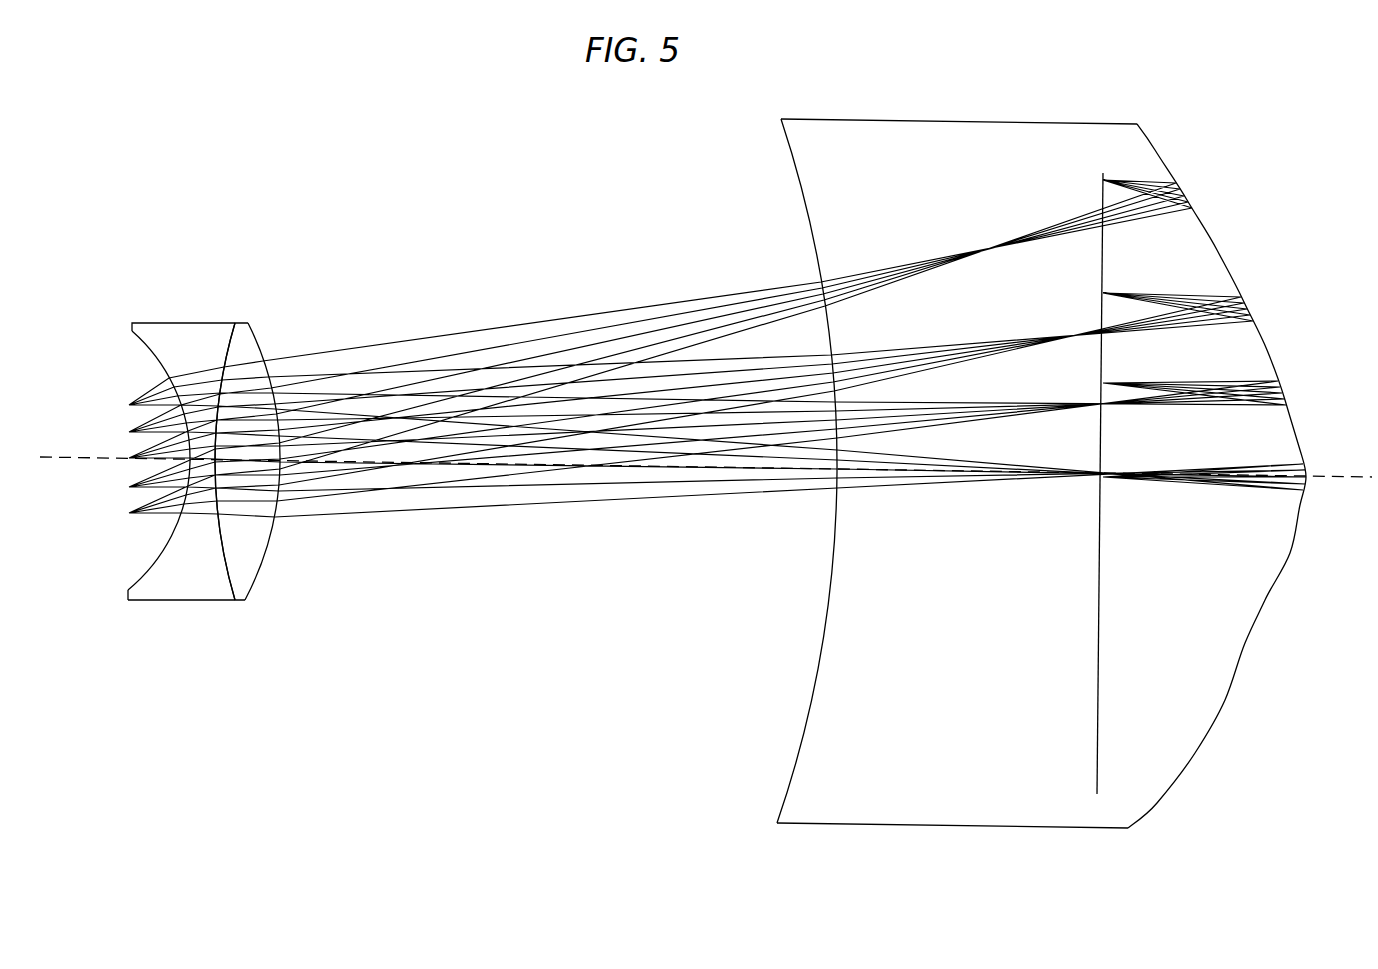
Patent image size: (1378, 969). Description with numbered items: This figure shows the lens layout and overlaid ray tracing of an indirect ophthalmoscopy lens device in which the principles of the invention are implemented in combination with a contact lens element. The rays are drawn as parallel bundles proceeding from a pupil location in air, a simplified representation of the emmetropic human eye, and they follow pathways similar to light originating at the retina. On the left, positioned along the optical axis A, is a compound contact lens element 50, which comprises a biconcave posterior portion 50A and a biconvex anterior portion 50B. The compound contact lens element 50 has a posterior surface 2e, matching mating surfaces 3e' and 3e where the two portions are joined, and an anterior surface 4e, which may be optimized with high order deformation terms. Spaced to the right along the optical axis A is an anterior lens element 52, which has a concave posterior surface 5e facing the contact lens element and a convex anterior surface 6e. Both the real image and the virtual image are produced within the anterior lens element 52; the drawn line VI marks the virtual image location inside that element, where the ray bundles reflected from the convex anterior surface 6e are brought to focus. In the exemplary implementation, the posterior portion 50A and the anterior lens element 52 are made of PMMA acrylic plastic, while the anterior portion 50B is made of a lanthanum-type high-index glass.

The anterior lens element 52 is at (1030, 451).
The compound contact lens element 50 is at (223, 424).
The biconcave posterior portion 50A is at (166, 454).
The biconvex anterior portion 50B is at (281, 466).
The posterior surface 2e is at (161, 553).
The mating surface 3e is at (209, 498).
The mating surface 3e' is at (266, 473).
The anterior surface 4e is at (270, 545).
The concave posterior surface 5e is at (818, 663).
The convex anterior surface 6e is at (1225, 705).
The virtual image plane VI is at (1069, 483).
The optical axis A is at (1350, 476).